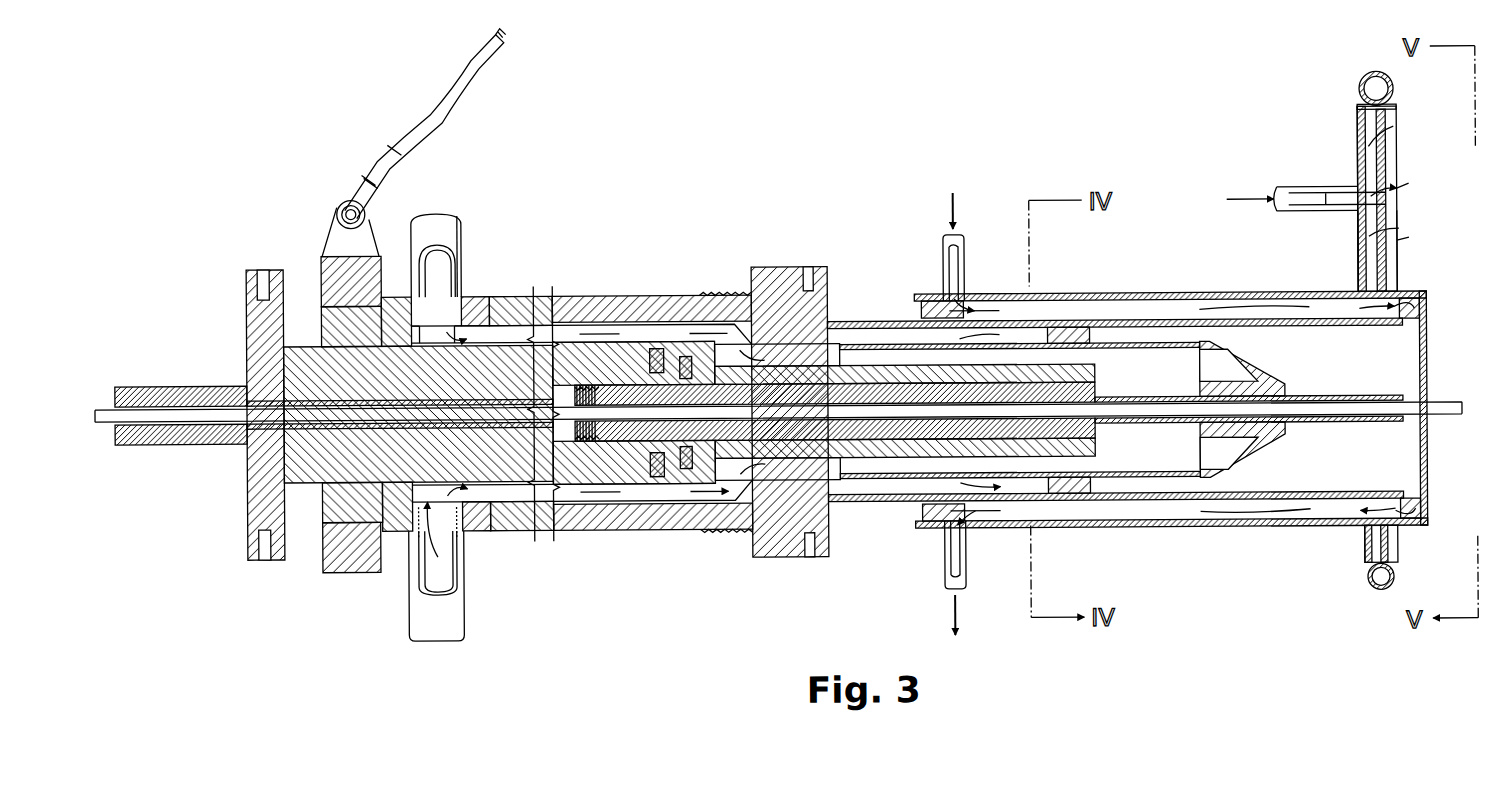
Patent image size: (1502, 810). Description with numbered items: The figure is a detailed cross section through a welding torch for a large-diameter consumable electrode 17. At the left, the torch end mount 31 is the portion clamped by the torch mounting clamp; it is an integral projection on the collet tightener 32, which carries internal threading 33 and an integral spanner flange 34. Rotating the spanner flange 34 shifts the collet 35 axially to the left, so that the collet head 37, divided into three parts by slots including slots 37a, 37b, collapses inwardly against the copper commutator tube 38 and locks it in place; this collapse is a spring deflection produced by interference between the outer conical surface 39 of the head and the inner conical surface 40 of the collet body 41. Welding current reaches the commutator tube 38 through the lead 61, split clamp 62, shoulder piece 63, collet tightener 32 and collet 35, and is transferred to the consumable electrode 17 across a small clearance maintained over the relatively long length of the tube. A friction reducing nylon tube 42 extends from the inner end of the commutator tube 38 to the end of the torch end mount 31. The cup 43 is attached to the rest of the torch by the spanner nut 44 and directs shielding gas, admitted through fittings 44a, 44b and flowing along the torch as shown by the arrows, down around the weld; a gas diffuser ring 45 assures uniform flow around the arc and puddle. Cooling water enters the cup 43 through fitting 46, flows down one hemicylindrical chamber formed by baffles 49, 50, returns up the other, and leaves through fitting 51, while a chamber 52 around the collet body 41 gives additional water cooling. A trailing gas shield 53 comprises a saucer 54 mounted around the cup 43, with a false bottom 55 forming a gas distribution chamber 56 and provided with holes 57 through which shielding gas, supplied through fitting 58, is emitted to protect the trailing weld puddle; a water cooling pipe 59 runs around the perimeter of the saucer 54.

The consumable electrode 17 is at (1442, 405).
The torch end mount 31 is at (175, 388).
The collet tightener 32 is at (302, 345).
The internal threading 33 is at (587, 387).
The integral spanner flange 34 is at (250, 551).
The collet 35 is at (870, 380).
The collet head 37 is at (1272, 409).
The slot 37a is at (1283, 390).
The slot 37b is at (1285, 435).
The copper commutator tube 38 is at (1363, 398).
The outer conical surface 39 is at (1260, 369).
The inner conical surface 40 is at (1258, 444).
The collet body 41 is at (1170, 322).
The friction reducing nylon tube 42 is at (177, 432).
The cup 43 is at (1128, 528).
The spanner nut 44 is at (765, 268).
The fitting 44a is at (455, 231).
The fitting 44b is at (448, 608).
The gas diffuser ring 45 is at (1082, 335).
The fitting 46 is at (938, 246).
The baffle 49 is at (1234, 300).
The baffle 50 is at (1267, 522).
The fitting 51 is at (960, 572).
The chamber 52 is at (897, 466).
The trailing gas shield 53 is at (1347, 198).
The saucer 54 is at (1363, 234).
The false bottom 55 is at (1386, 171).
The gas distribution chamber 56 is at (1372, 128).
The holes 57 is at (1404, 243).
The fitting 58 is at (1300, 203).
The water cooling pipe 59 is at (1362, 577).
The lead 61 is at (438, 118).
The split clamp 62 is at (332, 570).
The shoulder piece 63 is at (487, 302).